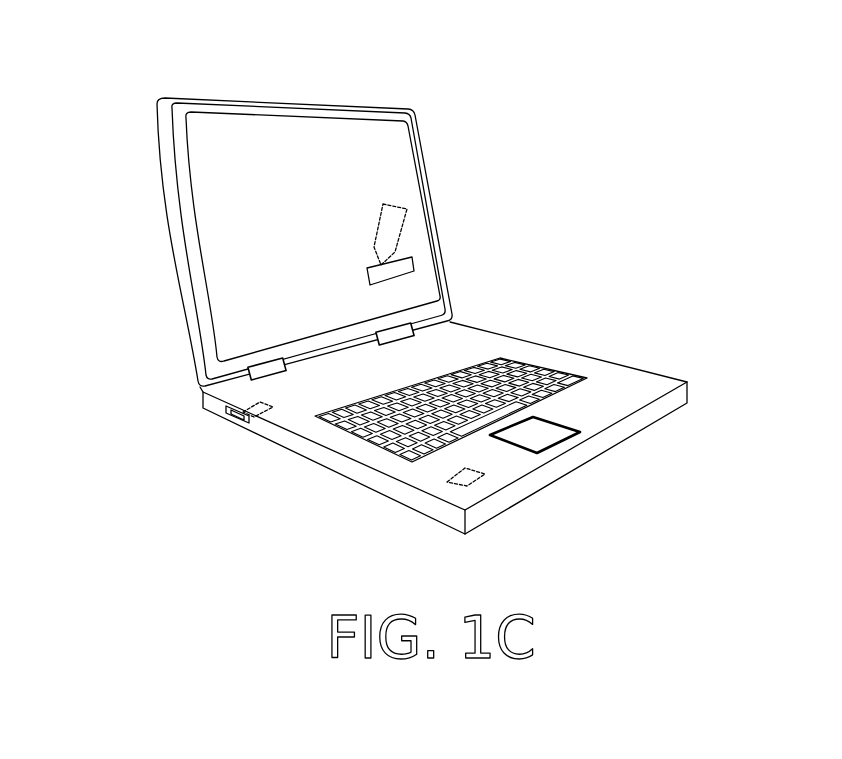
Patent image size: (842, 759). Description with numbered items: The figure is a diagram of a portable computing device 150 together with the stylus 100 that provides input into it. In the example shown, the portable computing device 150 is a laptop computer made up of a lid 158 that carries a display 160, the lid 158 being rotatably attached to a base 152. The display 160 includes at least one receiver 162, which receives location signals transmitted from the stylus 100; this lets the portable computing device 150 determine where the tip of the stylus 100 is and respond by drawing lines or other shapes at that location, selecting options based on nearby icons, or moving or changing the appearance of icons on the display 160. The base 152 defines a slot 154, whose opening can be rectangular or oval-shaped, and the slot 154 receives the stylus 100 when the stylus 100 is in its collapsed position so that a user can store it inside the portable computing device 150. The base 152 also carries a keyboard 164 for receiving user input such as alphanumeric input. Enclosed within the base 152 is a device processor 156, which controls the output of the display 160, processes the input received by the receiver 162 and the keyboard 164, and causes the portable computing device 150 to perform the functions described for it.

The stylus 100 is at (393, 204).
The portable computing device 150 is at (648, 193).
The base 152 is at (612, 360).
The slot 154 is at (223, 410).
The processor 156 is at (447, 482).
The lid 158 is at (168, 229).
The display 160 is at (293, 147).
The receiver 162 is at (413, 266).
The keyboard 164 is at (517, 362).